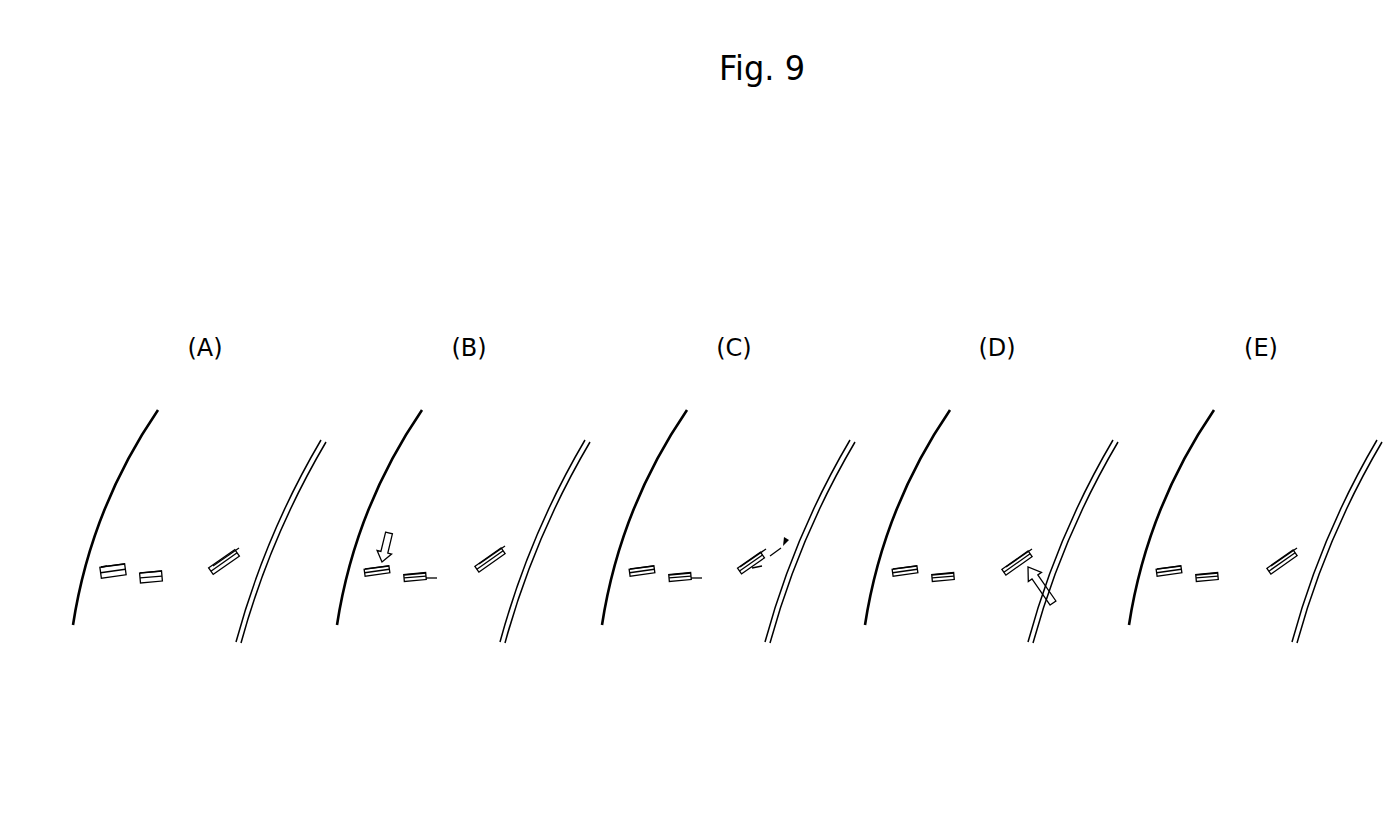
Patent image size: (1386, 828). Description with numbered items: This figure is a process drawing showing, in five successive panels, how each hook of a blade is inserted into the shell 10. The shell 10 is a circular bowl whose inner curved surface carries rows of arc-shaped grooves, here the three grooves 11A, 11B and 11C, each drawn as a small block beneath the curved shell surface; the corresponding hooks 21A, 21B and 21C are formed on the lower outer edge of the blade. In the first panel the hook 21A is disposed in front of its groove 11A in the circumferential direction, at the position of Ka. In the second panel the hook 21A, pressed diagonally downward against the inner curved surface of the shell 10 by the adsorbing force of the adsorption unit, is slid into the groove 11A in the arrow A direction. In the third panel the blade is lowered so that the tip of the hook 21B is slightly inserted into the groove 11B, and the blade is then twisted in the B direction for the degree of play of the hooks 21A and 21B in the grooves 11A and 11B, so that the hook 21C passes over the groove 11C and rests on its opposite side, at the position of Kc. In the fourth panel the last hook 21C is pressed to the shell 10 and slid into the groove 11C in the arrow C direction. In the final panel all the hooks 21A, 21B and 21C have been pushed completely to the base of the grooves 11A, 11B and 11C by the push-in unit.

The shell 10 is at (124, 454).
The groove 11A is at (107, 576).
The groove 11B is at (147, 582).
The groove 11C is at (227, 572).
The hook 21A is at (121, 566).
The hook 21B is at (171, 581).
The hook 21C is at (224, 551).
The position of hook 21A in front of groove 11A Ka is at (107, 562).
The position of hook 21C in front of groove 11C Kc is at (760, 567).
The arrow A direction A is at (380, 542).
The B direction B is at (786, 545).
The arrow C direction C is at (1053, 596).